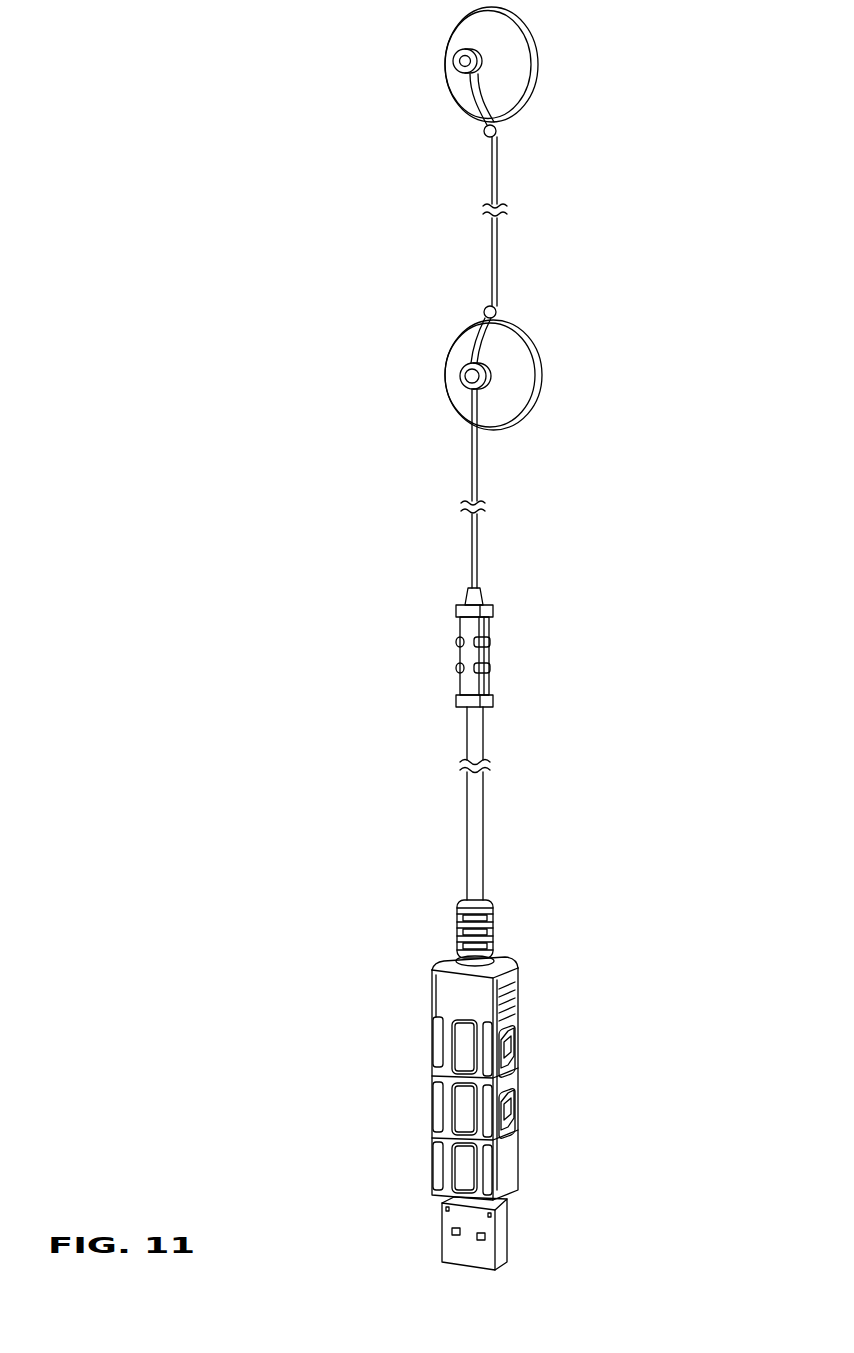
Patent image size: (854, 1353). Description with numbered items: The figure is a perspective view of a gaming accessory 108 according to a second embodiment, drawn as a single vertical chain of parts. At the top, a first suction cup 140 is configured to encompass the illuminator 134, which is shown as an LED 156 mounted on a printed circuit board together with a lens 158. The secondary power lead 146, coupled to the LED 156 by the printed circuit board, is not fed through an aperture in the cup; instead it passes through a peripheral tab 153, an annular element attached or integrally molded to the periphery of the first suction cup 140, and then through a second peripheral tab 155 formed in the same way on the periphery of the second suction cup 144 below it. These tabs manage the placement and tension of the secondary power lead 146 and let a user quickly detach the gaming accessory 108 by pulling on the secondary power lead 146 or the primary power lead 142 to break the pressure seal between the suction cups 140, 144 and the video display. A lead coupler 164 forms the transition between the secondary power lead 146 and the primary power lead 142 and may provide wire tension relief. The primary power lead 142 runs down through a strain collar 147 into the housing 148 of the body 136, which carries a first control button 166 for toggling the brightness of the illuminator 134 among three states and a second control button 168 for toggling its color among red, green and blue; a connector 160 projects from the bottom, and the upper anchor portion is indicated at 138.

The gaming accessory 108 is at (125, 88).
The illuminator 134 is at (336, 144).
The anchor portion 138 is at (620, 137).
The device body 136 is at (620, 873).
The first suction cup 140 is at (518, 67).
The second suction cup 144 is at (518, 367).
The secondary power lead 146 is at (498, 197).
The primary power lead 142 is at (472, 830).
The strain relief collar 147 is at (458, 937).
The housing 148 is at (518, 1005).
The peripheral tab 153 is at (488, 133).
The second peripheral tab 155 is at (486, 307).
The LED 156 is at (477, 47).
The lens 158 is at (458, 63).
The USB connector 160 is at (485, 1253).
The lead coupler 164 is at (470, 653).
The first control button 166 is at (515, 1050).
The second control button 168 is at (513, 1110).